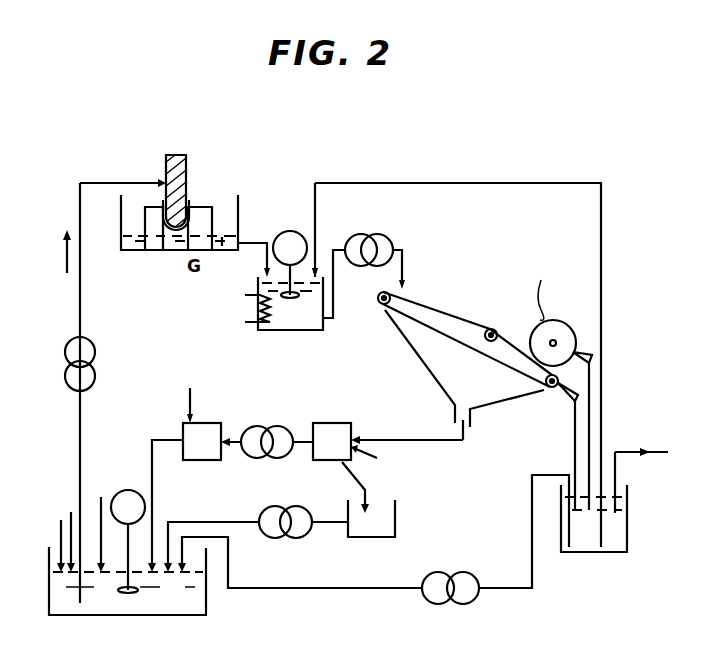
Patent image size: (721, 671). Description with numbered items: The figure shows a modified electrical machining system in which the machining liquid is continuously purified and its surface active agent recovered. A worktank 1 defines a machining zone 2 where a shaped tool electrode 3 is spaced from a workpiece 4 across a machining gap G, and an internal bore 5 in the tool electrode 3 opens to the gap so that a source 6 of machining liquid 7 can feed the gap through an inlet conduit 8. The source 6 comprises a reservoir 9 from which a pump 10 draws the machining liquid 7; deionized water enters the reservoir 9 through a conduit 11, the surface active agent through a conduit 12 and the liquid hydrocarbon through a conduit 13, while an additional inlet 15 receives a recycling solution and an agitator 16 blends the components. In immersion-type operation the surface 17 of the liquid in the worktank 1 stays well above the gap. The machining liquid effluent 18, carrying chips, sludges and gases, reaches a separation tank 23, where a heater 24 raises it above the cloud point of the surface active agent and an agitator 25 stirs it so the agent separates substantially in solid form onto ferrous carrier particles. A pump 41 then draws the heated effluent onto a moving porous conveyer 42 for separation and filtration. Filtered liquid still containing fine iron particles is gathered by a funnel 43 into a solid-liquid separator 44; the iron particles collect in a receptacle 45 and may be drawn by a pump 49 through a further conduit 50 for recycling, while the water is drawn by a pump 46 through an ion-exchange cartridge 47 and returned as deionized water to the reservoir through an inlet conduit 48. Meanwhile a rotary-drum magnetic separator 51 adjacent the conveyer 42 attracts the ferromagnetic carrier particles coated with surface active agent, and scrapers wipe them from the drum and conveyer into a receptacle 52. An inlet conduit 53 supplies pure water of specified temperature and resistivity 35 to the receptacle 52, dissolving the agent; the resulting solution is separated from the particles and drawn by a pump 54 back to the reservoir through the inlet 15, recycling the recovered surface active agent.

The worktank 1 is at (240, 198).
The machining zone 2 is at (190, 204).
The tool electrode 3 is at (187, 160).
The workpiece 4 is at (168, 246).
The internal bore 5 is at (189, 190).
The source of machining liquid 6 is at (24, 583).
The machining liquid 7 is at (66, 265).
The inlet conduit 8 is at (107, 183).
The reservoir 9 is at (187, 615).
The pump 10 is at (96, 371).
The conduit 11 is at (101, 497).
The conduit 12 is at (71, 512).
The conduit 13 is at (61, 520).
The additional inlet 15 is at (218, 534).
The agitator 16 is at (130, 532).
The surface of the liquid 17 is at (222, 237).
The machining liquid effluent 18 is at (290, 320).
The separation tank 23 is at (318, 332).
The heater 24 is at (258, 305).
The agitator 25 is at (267, 270).
The pure water of specified temperature and resistivity 35 is at (655, 450).
The pump 41 is at (369, 243).
The moving porous conveyer 42 is at (463, 315).
The funnel 43 is at (468, 400).
The solid-liquid separator 44 is at (333, 423).
The receptacle 45 is at (397, 502).
The pump 46 is at (267, 426).
The ion-exchange cartridge 47 is at (208, 424).
The inlet conduit 48 is at (152, 447).
The pump 49 is at (310, 538).
The further conduit 50 is at (225, 522).
The rotary-drum magnetic separator 51 is at (563, 323).
The receptacle 52 is at (628, 540).
The inlet conduit 53 is at (618, 478).
The pump 54 is at (480, 602).